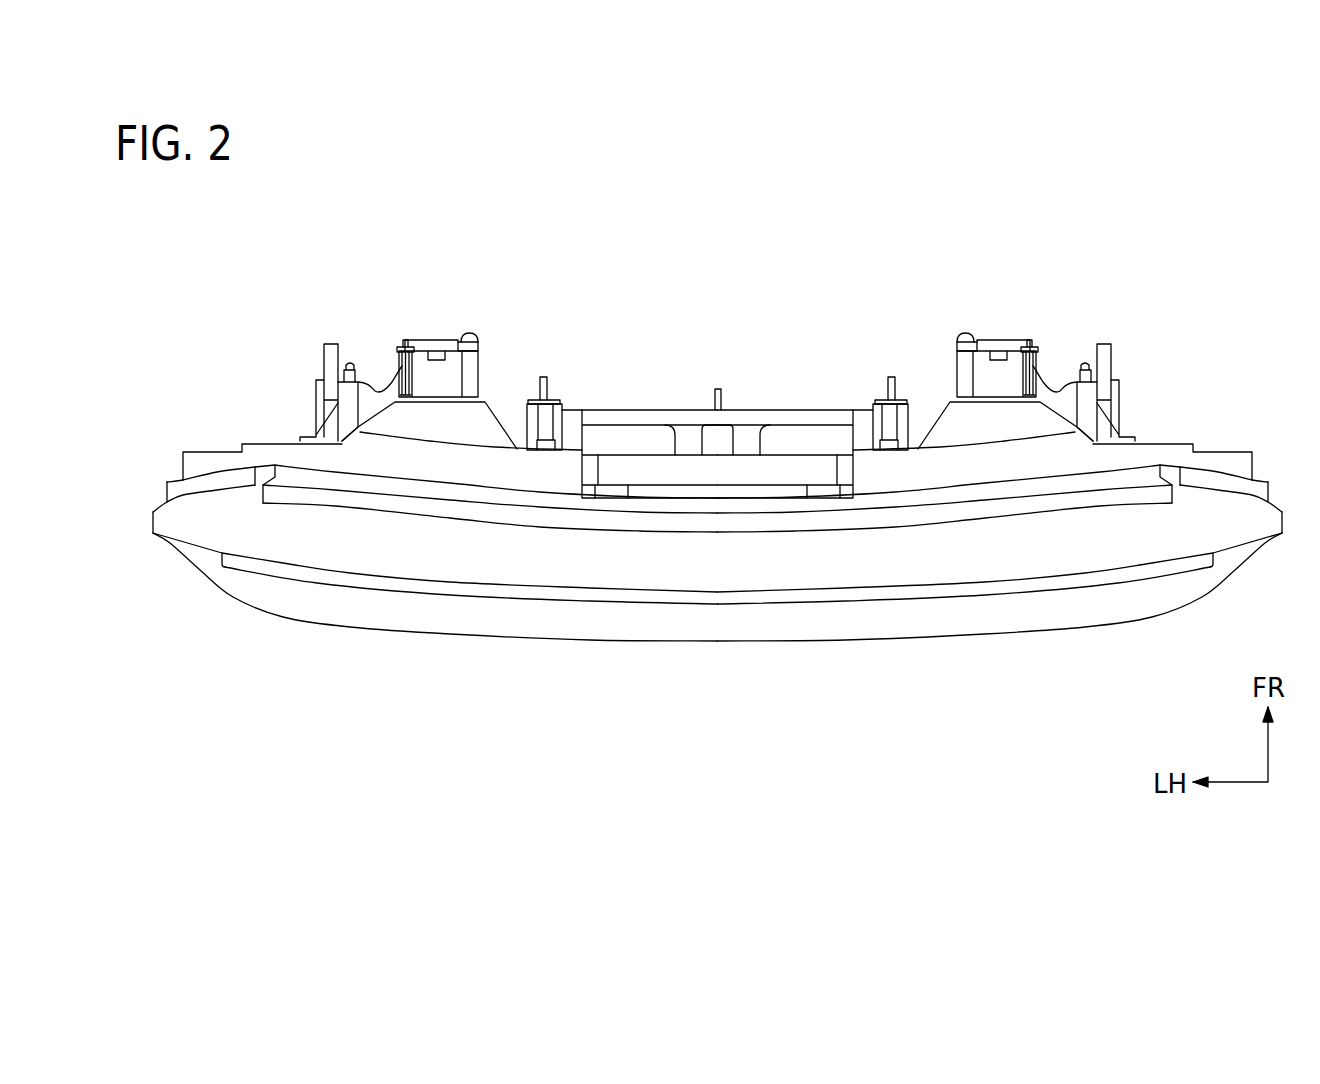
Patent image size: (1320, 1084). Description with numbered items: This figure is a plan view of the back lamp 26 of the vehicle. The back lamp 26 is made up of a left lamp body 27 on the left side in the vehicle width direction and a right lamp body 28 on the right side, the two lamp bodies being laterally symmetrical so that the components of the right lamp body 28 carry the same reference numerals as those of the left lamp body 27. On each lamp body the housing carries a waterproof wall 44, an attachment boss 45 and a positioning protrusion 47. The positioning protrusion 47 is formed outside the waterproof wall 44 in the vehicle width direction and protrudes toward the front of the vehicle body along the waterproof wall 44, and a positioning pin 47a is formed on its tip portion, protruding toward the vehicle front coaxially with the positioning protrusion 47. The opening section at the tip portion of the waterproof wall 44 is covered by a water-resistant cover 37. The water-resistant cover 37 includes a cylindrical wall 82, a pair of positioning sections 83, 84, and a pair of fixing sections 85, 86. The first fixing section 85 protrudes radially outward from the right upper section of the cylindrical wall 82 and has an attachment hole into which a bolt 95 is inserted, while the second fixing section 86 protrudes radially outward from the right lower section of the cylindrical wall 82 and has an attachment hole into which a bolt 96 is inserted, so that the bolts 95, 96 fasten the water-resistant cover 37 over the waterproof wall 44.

The back lamp 26 is at (748, 565).
The left lamp body 27 is at (370, 404).
The right lamp body 28 is at (1065, 378).
The water-resistant cover 37 is at (424, 325).
The waterproof wall 44 is at (438, 385).
The attachment boss 45 is at (470, 373).
The positioning protrusion 47 is at (402, 365).
The positioning pin 47a is at (403, 339).
The cylindrical wall 82 is at (443, 343).
The positioning section 83 is at (402, 348).
The positioning section 84 is at (1038, 350).
The first fixing section 85 is at (477, 347).
The second fixing section 86 is at (958, 347).
The bolt 95 is at (470, 337).
The bolt 96 is at (967, 338).